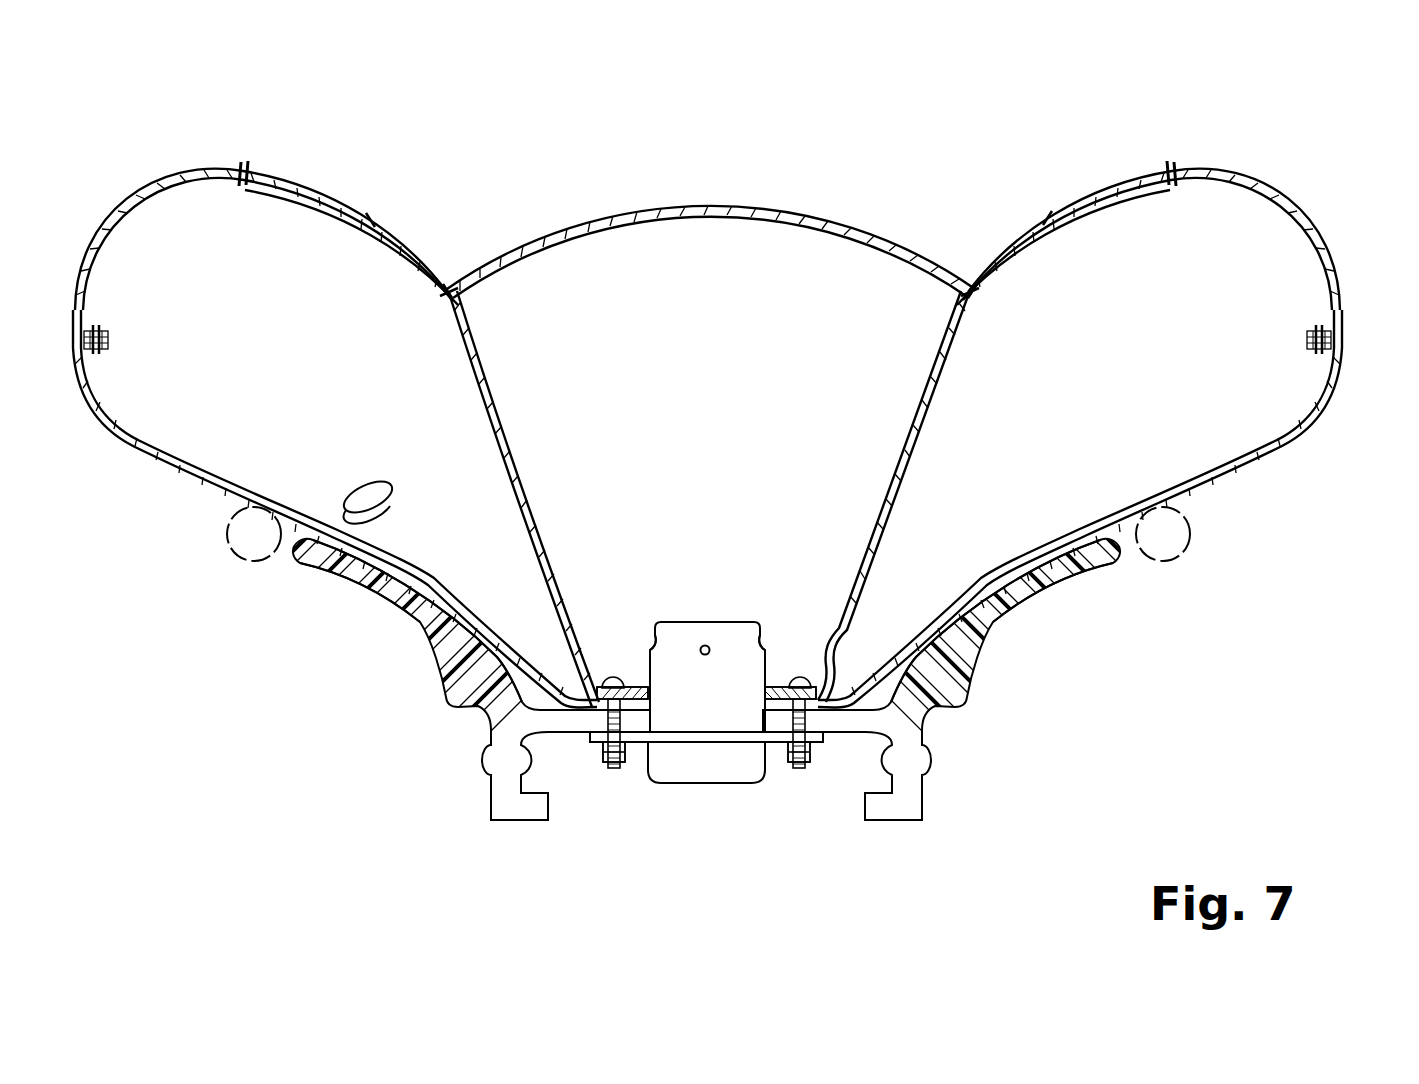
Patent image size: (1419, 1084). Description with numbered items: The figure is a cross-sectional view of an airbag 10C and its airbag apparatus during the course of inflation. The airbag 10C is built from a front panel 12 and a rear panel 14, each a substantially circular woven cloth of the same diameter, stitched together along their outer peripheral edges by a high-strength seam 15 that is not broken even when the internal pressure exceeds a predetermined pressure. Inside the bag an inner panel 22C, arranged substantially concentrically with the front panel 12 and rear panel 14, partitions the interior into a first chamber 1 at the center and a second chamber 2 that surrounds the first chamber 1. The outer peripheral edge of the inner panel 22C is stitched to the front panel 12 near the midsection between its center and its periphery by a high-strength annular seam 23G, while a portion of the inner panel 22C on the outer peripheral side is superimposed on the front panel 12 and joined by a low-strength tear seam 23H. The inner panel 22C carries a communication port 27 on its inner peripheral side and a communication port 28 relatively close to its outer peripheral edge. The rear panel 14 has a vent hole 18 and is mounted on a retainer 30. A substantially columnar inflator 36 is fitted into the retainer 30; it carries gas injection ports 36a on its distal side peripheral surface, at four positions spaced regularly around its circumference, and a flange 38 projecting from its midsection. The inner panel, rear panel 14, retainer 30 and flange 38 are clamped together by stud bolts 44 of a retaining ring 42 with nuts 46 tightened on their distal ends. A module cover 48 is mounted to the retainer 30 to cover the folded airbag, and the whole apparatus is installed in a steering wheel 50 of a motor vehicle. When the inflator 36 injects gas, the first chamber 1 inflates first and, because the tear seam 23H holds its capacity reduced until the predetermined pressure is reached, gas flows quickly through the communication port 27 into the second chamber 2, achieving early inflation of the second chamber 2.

The first chamber 1 is at (711, 416).
The second chamber 2 is at (707, 438).
The airbag 10C is at (1305, 190).
The front panel 12 is at (715, 205).
The rear panel 14 is at (1270, 452).
The seam 15 is at (100, 333).
The vent hole 18 is at (380, 489).
The inner panel 22C is at (506, 418).
The seam 23G is at (247, 165).
The tear seam 23H is at (372, 218).
The communication port 27 is at (836, 638).
The communication port 28 is at (312, 210).
The retainer 30 is at (709, 700).
The inflator 36 is at (682, 715).
The gas injection ports 36a is at (703, 646).
The flange 38 is at (658, 745).
The retaining ring 42 is at (787, 686).
The stud bolts 44 is at (706, 716).
The nuts 46 is at (600, 762).
The module cover 48 is at (350, 580).
The steering wheel 50 is at (255, 562).